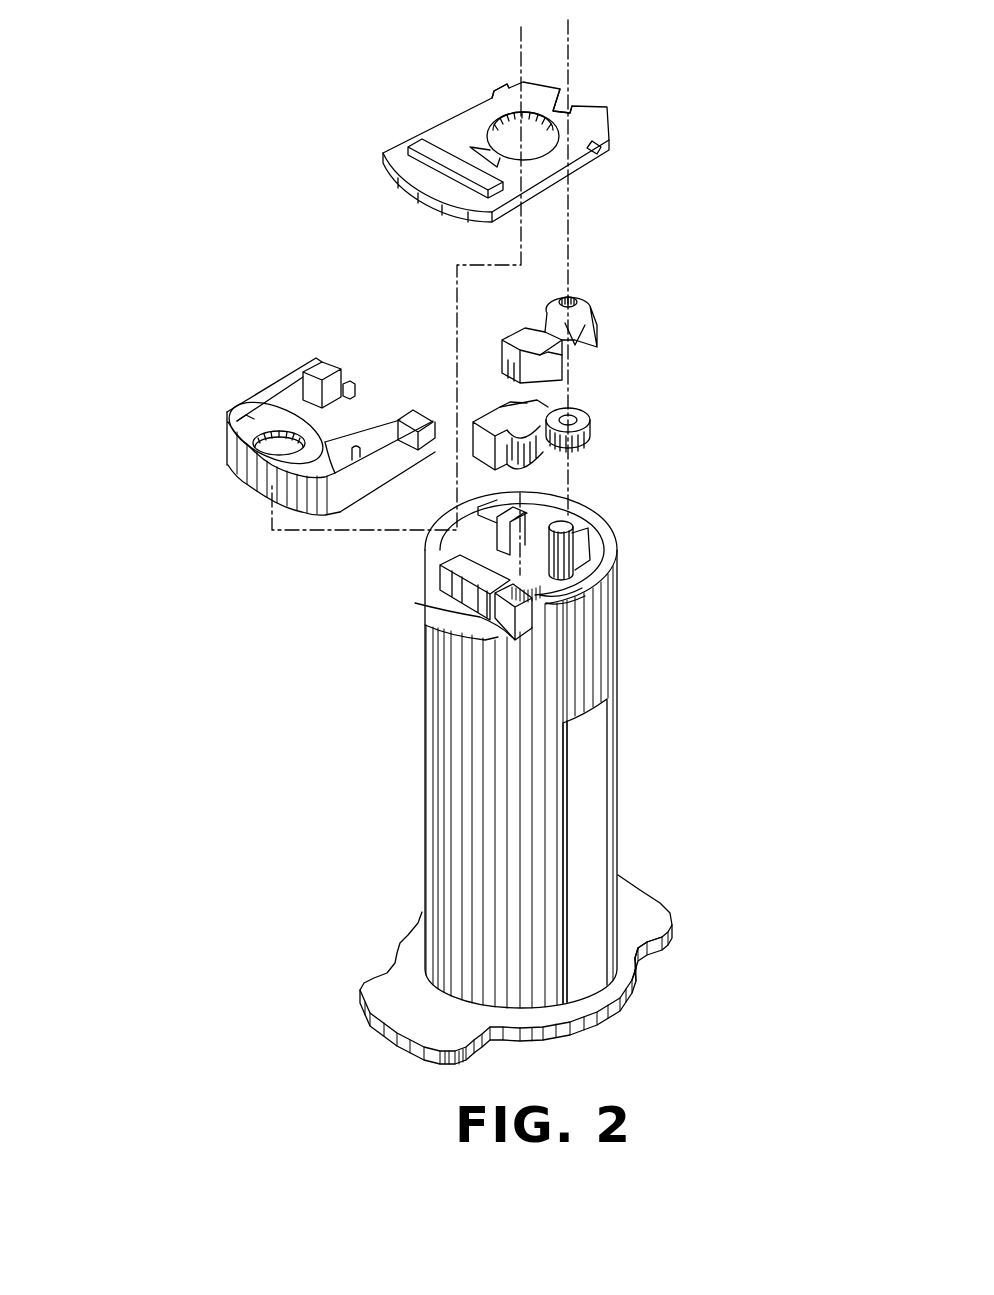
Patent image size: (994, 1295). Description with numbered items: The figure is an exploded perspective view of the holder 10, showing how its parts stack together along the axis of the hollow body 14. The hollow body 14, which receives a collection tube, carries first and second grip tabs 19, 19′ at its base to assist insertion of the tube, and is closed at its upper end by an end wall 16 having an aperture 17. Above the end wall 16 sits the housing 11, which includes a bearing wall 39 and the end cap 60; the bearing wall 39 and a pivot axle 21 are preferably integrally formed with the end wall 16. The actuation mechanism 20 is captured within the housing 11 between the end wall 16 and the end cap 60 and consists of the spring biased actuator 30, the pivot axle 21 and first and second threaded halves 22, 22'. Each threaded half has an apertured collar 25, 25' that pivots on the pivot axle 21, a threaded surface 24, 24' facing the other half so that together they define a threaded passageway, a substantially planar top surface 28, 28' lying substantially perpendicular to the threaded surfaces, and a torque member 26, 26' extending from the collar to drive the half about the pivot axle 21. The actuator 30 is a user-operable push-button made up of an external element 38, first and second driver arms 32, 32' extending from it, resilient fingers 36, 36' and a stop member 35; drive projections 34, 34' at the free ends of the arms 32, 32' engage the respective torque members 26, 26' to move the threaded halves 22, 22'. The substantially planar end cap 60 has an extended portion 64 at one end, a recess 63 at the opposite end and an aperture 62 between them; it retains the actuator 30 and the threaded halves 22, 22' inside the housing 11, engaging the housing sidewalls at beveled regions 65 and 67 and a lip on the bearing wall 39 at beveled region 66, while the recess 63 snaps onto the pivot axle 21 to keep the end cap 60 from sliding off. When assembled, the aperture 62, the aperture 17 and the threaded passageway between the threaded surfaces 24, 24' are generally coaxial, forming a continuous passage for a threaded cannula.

The holder 10 is at (732, 806).
The housing 11 is at (665, 590).
The hollow body 14 is at (420, 872).
The end wall 16 is at (480, 638).
The aperture 17 is at (585, 617).
The first grip tab 19 is at (420, 1053).
The second grip tab 19′ is at (667, 948).
The actuation mechanism 20 is at (248, 625).
The pivot axle 21 is at (577, 521).
The first threaded half 22 is at (485, 401).
The second threaded half 22' is at (488, 315).
The first threaded surface 24 is at (544, 452).
The second threaded surface 24' is at (531, 324).
The apertured collar 25 is at (606, 441).
The apertured collar 25' is at (615, 279).
The first torque member 26 is at (599, 423).
The second torque member 26' is at (611, 315).
The first top surface 28 is at (557, 388).
The second top surface 28' is at (614, 342).
The actuator 30 is at (135, 449).
The first driver arm 32 is at (274, 374).
The second driver arm 32' is at (380, 476).
The drive projection 34 is at (320, 359).
The drive projection 34' is at (426, 459).
The stop member 35 is at (277, 500).
The resilient finger 36 is at (215, 393).
The resilient finger 36' is at (334, 508).
The external element 38 is at (227, 457).
The bearing wall 39 is at (460, 592).
The end cap 60 is at (322, 113).
The aperture 62 is at (533, 128).
The recess 63 is at (567, 107).
The extended portion 64 is at (403, 143).
The beveled region 65 is at (505, 86).
The beveled region 66 is at (473, 147).
The beveled region 67 is at (600, 147).